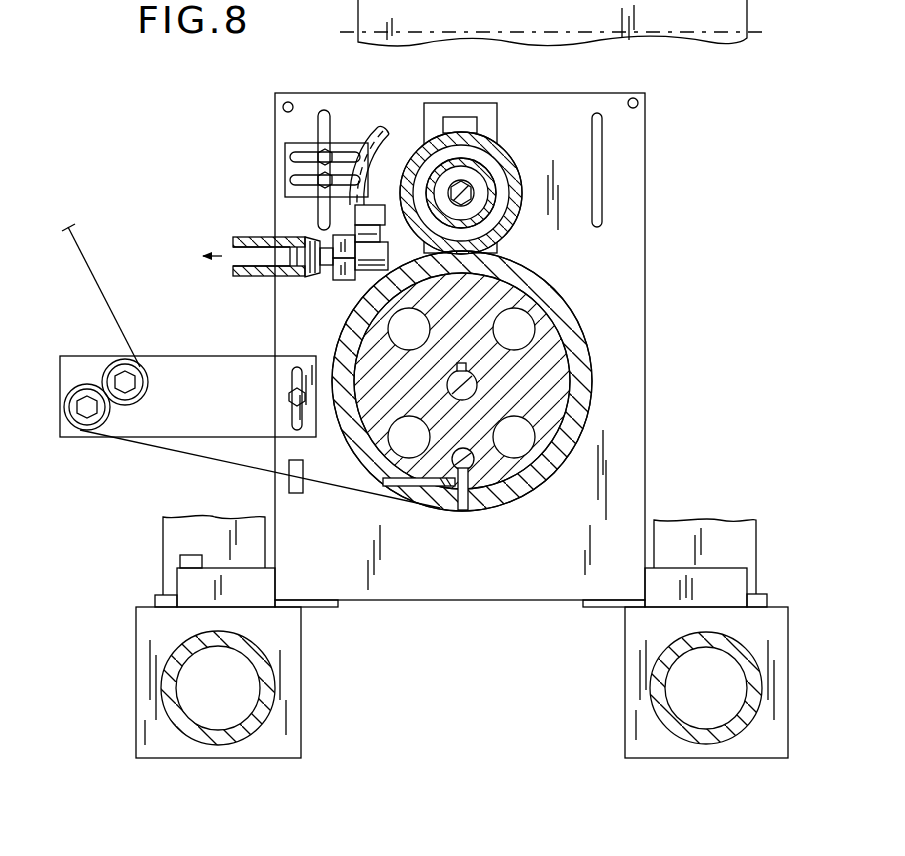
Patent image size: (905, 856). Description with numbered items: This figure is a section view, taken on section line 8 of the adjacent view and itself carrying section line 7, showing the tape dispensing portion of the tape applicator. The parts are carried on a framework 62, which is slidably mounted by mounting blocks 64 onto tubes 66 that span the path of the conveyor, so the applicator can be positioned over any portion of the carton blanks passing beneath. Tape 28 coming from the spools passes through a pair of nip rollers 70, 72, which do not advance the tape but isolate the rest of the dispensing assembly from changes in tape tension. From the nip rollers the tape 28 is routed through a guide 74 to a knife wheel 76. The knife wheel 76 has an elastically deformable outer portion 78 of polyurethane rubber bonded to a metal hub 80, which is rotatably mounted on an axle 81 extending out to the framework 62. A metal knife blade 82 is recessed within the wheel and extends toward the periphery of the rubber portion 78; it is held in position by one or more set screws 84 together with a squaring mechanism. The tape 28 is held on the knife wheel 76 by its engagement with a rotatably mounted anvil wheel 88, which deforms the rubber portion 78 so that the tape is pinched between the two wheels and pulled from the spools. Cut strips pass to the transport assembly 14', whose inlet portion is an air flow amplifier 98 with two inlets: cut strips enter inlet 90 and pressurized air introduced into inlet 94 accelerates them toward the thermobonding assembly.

The section line 7- 7 is at (150, 60).
The section line 8- 8 is at (715, 62).
The transport assembly 14' is at (268, 226).
The tape 28 is at (104, 300).
The framework 62 is at (645, 240).
The mounting blocks 64 is at (302, 652).
The tubes 66 is at (267, 703).
The nip roller 70 is at (64, 410).
The nip roller 72 is at (147, 383).
The guide 74 is at (304, 487).
The knife wheel 76 is at (477, 395).
The elastically deformable outer portion 78 is at (574, 338).
The metal hub 80 is at (545, 350).
The axle 81 is at (478, 383).
The knife blade 82 is at (480, 485).
The set screws 84 is at (455, 498).
The anvil wheel 88 is at (514, 152).
The inlet 90 is at (386, 250).
The inlet 94 is at (378, 136).
The air flow amplifier 98 is at (337, 282).